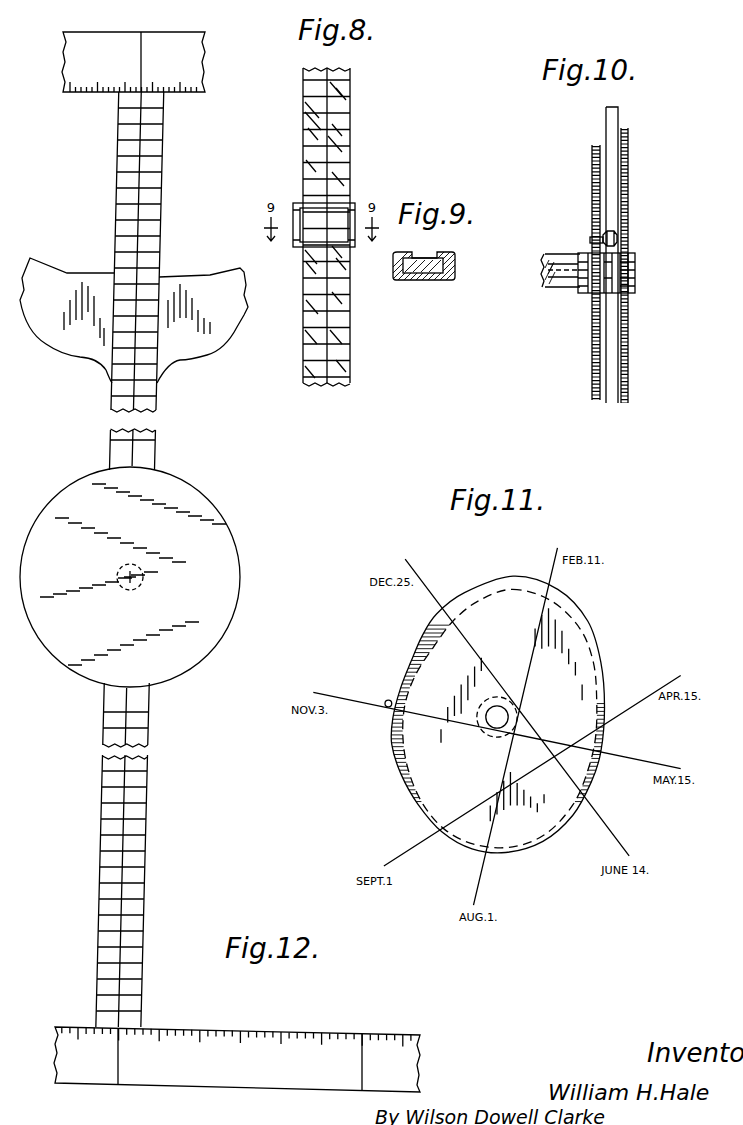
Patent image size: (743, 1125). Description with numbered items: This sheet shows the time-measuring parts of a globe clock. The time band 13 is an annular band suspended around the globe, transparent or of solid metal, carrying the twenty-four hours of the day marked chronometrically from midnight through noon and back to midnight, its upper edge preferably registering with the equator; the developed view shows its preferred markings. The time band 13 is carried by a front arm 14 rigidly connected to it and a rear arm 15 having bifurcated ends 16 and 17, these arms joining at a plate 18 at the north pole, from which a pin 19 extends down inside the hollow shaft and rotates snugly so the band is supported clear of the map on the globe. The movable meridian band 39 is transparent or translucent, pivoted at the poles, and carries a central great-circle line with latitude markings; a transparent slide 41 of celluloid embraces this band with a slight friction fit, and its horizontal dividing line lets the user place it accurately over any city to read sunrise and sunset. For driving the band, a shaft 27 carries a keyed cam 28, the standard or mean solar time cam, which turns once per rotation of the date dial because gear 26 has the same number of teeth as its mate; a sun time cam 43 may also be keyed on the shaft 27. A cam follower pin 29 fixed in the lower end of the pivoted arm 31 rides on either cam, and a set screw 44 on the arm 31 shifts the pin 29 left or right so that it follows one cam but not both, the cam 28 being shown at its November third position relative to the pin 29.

In FIG. 12, the time band 13 is at (82, 96).
In FIG. 12, the front arm 14 is at (140, 904).
In FIG. 12, the rear arm 15 is at (118, 182).
In FIG. 12, the bifurcated end 16 is at (38, 272).
In FIG. 12, the bifurcated end 17 is at (236, 278).
In FIG. 12, the plate 18 is at (240, 578).
In FIG. 12, the pin 19 is at (140, 586).
In FIG. 8, the movable meridian band 39 is at (305, 366).
In FIG. 9, the movable meridian band 39 is at (437, 252).
In FIG. 8, the transparent slide 41 is at (352, 246).
In FIG. 9, the transparent slide 41 is at (437, 281).
In FIG. 10, the arm 31 is at (620, 107).
In FIG. 10, the cam 28 is at (592, 168).
In FIG. 10, the cam 43 is at (630, 188).
In FIG. 11, the cam 43 is at (546, 599).
In FIG. 10, the cam follower pin 29 is at (590, 240).
In FIG. 11, the cam follower pin 29 is at (370, 681).
In FIG. 10, the set screw 44 is at (618, 234).
In FIG. 10, the shaft 27 is at (562, 281).
In FIG. 11, the shaft 27 is at (479, 682).
In FIG. 11, the gear 26 is at (388, 640).